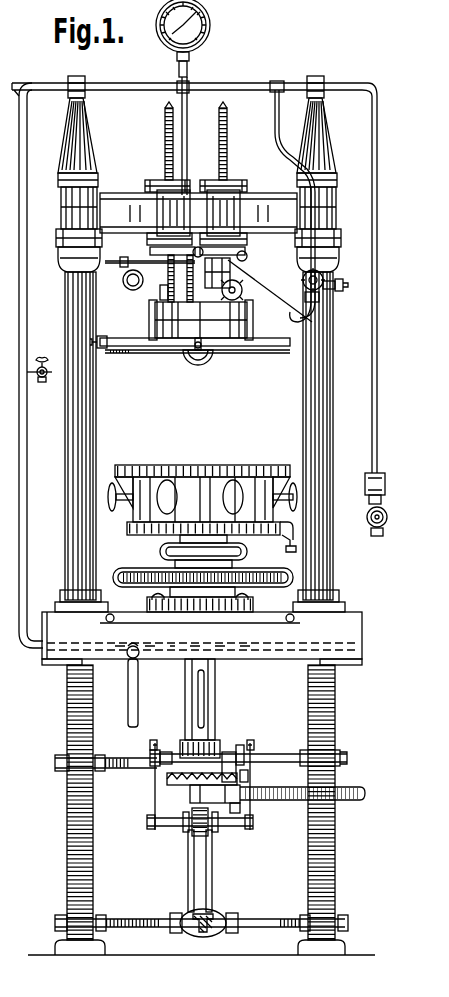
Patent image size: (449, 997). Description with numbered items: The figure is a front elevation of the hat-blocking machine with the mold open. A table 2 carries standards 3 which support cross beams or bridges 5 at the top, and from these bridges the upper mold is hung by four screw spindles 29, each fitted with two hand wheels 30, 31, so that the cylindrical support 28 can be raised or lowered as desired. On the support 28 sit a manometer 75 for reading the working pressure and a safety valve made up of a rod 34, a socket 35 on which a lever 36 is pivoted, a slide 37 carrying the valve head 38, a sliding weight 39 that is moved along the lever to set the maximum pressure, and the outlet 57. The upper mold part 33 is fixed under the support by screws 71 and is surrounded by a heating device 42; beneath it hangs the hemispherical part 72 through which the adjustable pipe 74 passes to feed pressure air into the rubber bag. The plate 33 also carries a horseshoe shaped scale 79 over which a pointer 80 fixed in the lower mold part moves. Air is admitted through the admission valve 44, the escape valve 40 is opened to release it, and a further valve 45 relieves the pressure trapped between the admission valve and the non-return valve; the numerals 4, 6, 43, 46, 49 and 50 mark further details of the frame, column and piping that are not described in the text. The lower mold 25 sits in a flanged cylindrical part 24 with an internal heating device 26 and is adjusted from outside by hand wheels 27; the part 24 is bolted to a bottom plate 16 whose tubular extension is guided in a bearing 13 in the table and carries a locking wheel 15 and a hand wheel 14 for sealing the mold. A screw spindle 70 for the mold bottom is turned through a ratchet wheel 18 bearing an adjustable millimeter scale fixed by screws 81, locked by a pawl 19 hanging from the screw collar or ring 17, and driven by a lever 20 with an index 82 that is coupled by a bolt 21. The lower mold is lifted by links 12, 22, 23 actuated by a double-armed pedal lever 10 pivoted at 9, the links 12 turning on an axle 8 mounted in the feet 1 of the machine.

The feet 1 is at (336, 889).
The table 2 is at (363, 623).
The standards 3 is at (322, 381).
The right column capital 4 is at (338, 241).
The cross beams or bridges 5 is at (330, 212).
The right column cone 6 is at (322, 125).
The axle 8 is at (283, 756).
The pivot 9 is at (283, 918).
The pedal lever 10 is at (222, 934).
The links 12 is at (193, 834).
The bearing 13 is at (147, 607).
The hand wheel 14 is at (126, 578).
The locking wheel 15 is at (160, 550).
The bottom plate 16 is at (127, 531).
The screw collar or ring 17 is at (185, 742).
The ratchet wheel 18 is at (190, 795).
The locking pawl 19 is at (245, 775).
The lever 20 is at (365, 795).
The bolt 21 is at (241, 811).
The links 22 is at (156, 790).
The links 23 is at (213, 861).
The cylindrical part 24 is at (128, 465).
The lower mold 25 is at (160, 467).
The heating device 26 is at (288, 538).
The hand wheels 27 is at (112, 483).
The cylindrical support 28 is at (250, 319).
The screw spindles 29 is at (228, 138).
The hand wheel 30 is at (248, 254).
The hand wheel 31 is at (248, 185).
The upper mold part 33 is at (155, 332).
The rod 34 is at (232, 270).
The socket 35 is at (104, 350).
The lever 36 is at (120, 260).
The slide 37 is at (185, 258).
The valve head 38 is at (168, 279).
The sliding weight 39 is at (133, 290).
The escape valve 40 is at (243, 295).
The heating device 42 is at (130, 355).
The valve 43 is at (367, 517).
The admission valve 44 is at (303, 283).
The valve 45 is at (334, 262).
The valve 46 is at (45, 380).
The lever 49 is at (138, 691).
The knob 50 is at (128, 658).
The outlet 57 is at (176, 340).
The screw spindle 70 is at (167, 778).
The screws 71 is at (163, 296).
The hemispherical part 72 is at (212, 358).
The adjustable pipe 74 is at (198, 365).
The manometer 75 is at (196, 50).
The horseshoe shaped scale 79 is at (204, 353).
The needle or pointer 80 is at (210, 470).
The screws 81 is at (155, 778).
The index 82 is at (246, 784).